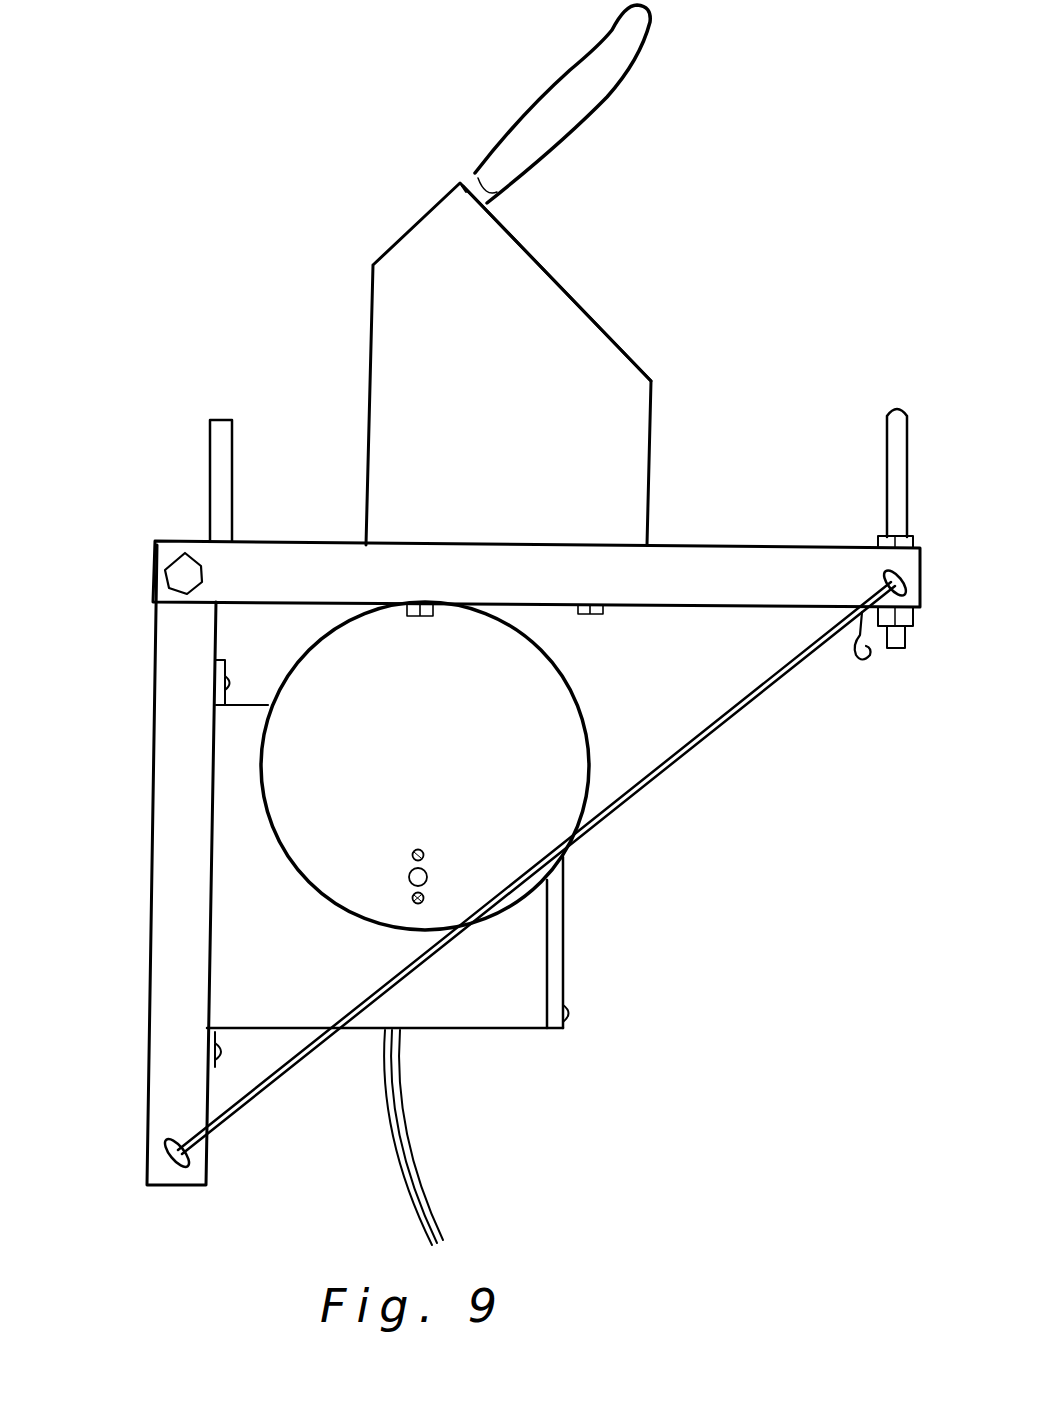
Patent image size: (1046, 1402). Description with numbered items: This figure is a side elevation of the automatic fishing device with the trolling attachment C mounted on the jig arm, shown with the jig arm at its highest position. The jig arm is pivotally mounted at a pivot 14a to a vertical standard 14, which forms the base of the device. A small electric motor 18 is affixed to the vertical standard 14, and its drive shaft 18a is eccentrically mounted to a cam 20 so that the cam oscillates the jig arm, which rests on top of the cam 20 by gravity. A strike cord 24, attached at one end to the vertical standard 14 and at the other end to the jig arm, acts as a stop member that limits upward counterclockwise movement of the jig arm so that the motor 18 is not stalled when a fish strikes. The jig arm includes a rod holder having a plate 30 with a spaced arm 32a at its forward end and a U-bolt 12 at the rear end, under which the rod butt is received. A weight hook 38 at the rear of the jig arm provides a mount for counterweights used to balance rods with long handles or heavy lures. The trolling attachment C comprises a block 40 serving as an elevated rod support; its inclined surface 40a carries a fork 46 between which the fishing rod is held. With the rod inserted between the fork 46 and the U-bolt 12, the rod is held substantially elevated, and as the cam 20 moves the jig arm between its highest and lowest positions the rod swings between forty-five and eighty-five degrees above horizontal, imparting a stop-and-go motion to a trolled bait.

The U-bolt 12 is at (874, 422).
The vertical standard 14 is at (147, 957).
The pivot 14a is at (162, 606).
The electric motor 18 is at (547, 905).
The drive shaft 18a is at (408, 879).
The cam 20 is at (440, 778).
The strike cord 24 is at (643, 787).
The plate 30 is at (673, 543).
The spaced arm 32a is at (220, 418).
The weight hook 38 is at (846, 657).
The block 40 is at (560, 468).
The inclined surface 40a is at (527, 252).
The fork 46 is at (607, 97).
The trolling attachment C is at (663, 358).